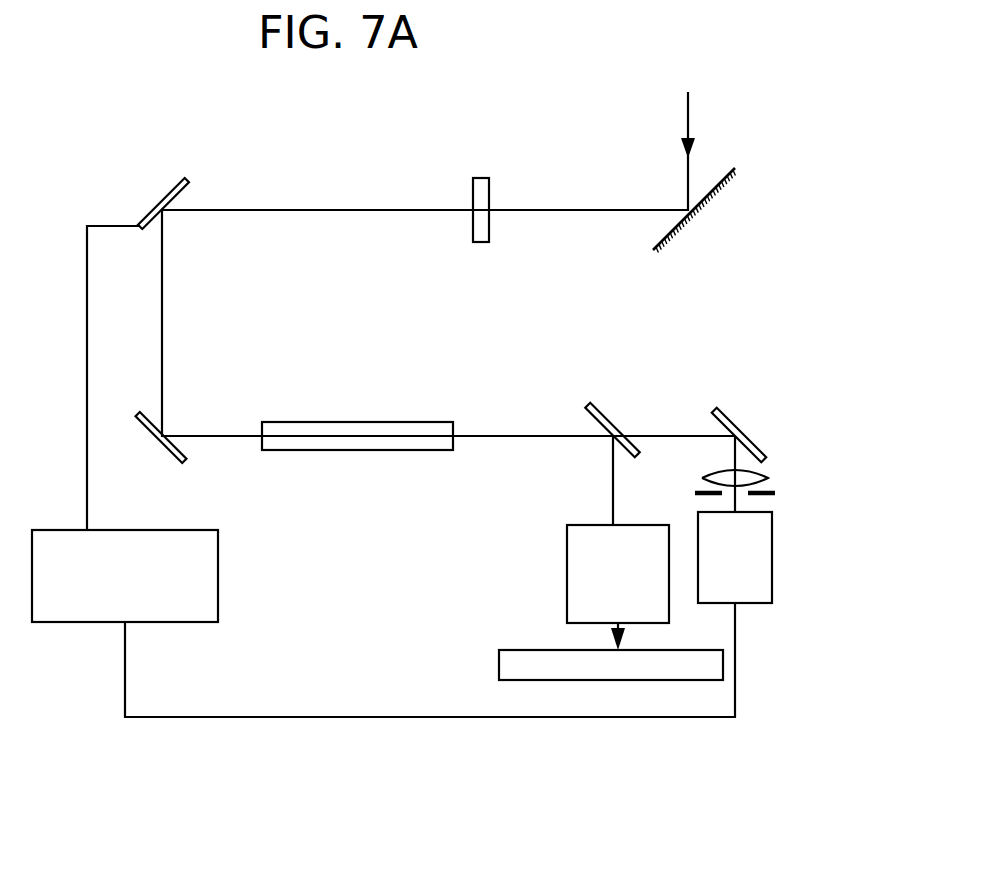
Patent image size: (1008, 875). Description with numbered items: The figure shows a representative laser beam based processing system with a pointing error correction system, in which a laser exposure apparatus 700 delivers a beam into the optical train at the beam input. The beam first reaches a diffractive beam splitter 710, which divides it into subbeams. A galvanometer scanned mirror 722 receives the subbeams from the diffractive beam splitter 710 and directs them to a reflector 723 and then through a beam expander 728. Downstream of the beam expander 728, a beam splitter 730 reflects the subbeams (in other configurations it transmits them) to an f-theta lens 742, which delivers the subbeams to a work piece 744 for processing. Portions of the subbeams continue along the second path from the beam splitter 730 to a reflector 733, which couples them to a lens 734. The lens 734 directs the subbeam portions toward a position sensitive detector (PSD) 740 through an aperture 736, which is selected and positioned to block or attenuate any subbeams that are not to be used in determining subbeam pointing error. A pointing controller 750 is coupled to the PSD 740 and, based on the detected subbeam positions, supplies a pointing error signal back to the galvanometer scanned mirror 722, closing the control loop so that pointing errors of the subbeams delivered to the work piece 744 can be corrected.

The laser exposure apparatus 700 is at (85, 762).
The diffractive beam splitter 710 is at (474, 243).
The galvanometer scanned mirror 722 is at (186, 178).
The reflector 723 is at (150, 408).
The beam expander 728 is at (318, 451).
The beam splitter 730 is at (590, 405).
The reflector 733 is at (718, 412).
The lens 734 is at (766, 477).
The aperture 736 is at (763, 496).
The position sensitive detector (PSD) 740 is at (772, 578).
The f-theta lens 742 is at (567, 555).
The work piece 744 is at (538, 650).
The pointing controller 750 is at (125, 576).